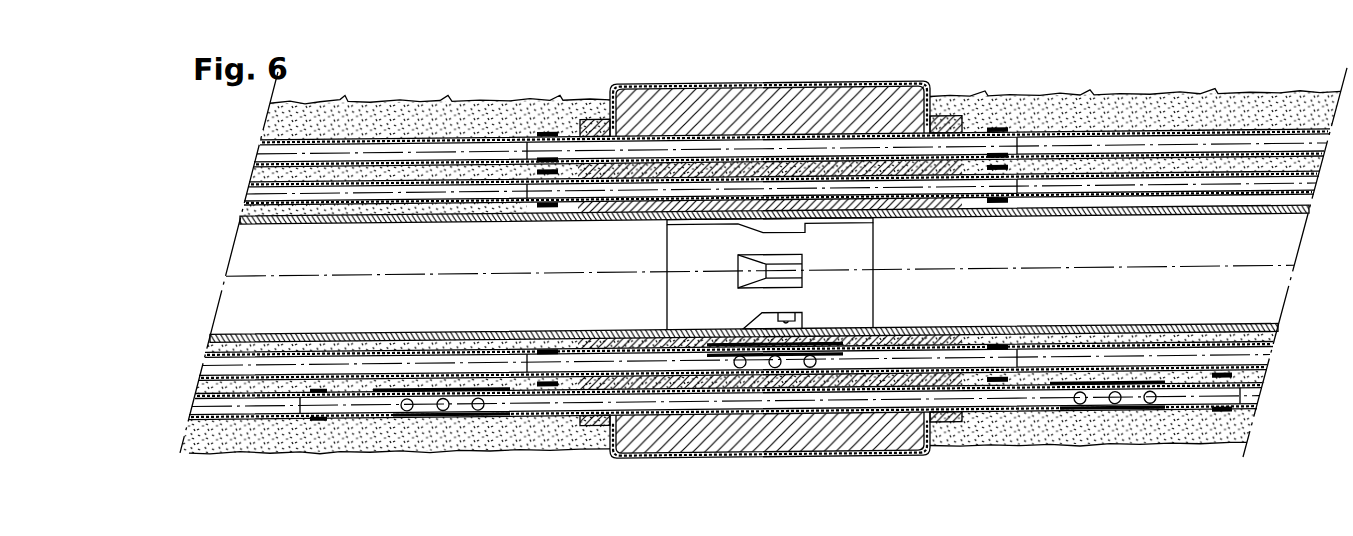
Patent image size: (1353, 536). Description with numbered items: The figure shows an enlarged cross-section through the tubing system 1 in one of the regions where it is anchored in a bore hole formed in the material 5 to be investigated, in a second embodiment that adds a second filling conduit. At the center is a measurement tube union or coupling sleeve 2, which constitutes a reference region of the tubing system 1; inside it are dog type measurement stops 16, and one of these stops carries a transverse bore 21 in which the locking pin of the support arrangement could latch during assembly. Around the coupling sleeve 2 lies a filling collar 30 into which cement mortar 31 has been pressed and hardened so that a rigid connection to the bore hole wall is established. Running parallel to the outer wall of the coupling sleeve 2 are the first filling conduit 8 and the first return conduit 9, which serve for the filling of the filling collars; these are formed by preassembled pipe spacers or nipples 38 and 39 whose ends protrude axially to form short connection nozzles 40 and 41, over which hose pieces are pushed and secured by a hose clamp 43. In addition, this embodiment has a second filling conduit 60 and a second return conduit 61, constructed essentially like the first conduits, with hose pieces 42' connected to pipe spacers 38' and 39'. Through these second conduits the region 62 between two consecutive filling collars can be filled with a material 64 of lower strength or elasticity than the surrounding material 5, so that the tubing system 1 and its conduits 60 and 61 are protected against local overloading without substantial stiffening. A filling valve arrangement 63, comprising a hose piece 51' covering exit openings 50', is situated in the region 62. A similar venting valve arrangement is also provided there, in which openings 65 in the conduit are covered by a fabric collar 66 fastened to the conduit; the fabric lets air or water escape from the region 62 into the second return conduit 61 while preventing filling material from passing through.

The tubing system 1 is at (1096, 218).
The measurement tube union 2 is at (693, 215).
The material 5 is at (982, 86).
The first filling conduit 8 is at (1212, 190).
The first return conduit 9 is at (270, 376).
The measurement stop 16 is at (742, 272).
The transverse bore 21 is at (792, 330).
The filling collar 30 is at (750, 100).
The cement mortar 31 is at (812, 108).
The pipe spacer 38 is at (913, 117).
The pipe spacer 38' is at (614, 94).
The pipe spacer 39 is at (771, 435).
The pipe spacer 39' is at (770, 452).
The connection nozzle 40 is at (527, 192).
The connection nozzle 41 is at (997, 203).
The hose piece 42' is at (759, 273).
The hose clamp 43 is at (552, 398).
The exit openings 50' is at (1115, 442).
The hose piece 51' is at (1118, 438).
The second filling conduit 60 is at (440, 152).
The second return conduit 61 is at (540, 408).
The region 62 is at (350, 109).
The filling valve arrangement 63 is at (1082, 436).
The material 64 is at (510, 117).
The openings 65 is at (442, 416).
The fabric collar 66 is at (388, 425).